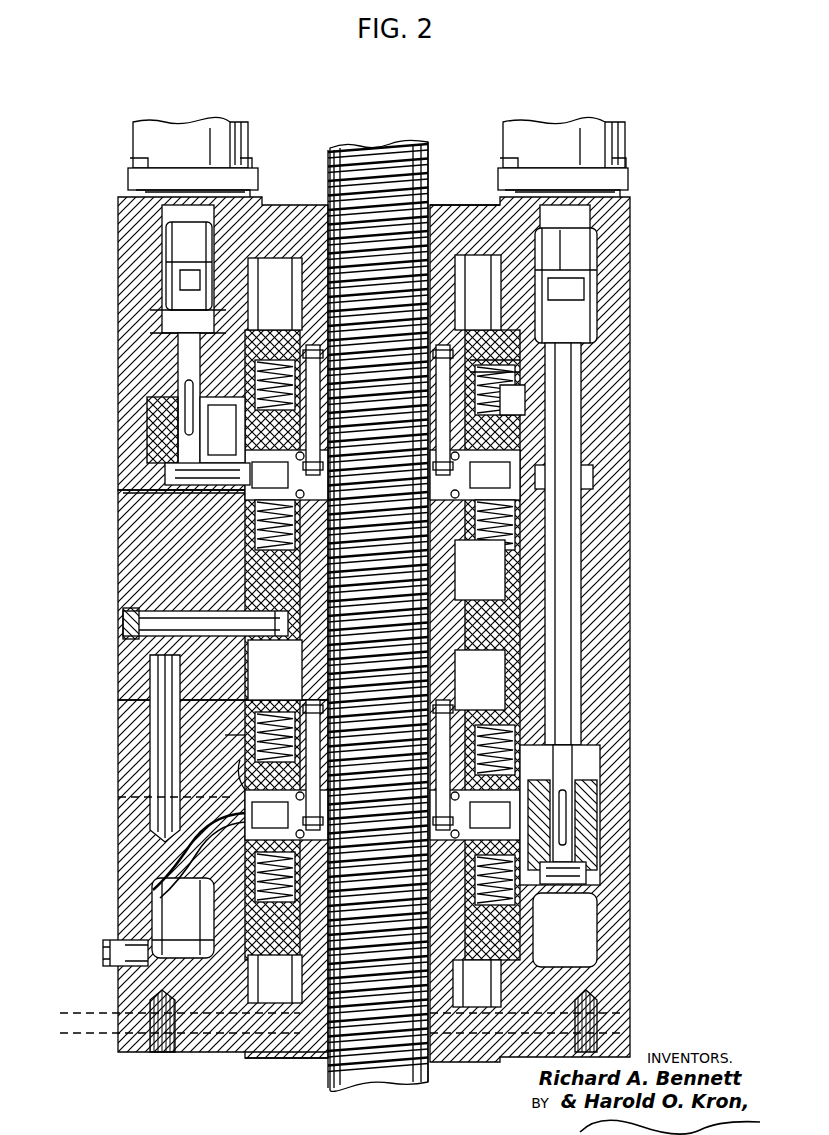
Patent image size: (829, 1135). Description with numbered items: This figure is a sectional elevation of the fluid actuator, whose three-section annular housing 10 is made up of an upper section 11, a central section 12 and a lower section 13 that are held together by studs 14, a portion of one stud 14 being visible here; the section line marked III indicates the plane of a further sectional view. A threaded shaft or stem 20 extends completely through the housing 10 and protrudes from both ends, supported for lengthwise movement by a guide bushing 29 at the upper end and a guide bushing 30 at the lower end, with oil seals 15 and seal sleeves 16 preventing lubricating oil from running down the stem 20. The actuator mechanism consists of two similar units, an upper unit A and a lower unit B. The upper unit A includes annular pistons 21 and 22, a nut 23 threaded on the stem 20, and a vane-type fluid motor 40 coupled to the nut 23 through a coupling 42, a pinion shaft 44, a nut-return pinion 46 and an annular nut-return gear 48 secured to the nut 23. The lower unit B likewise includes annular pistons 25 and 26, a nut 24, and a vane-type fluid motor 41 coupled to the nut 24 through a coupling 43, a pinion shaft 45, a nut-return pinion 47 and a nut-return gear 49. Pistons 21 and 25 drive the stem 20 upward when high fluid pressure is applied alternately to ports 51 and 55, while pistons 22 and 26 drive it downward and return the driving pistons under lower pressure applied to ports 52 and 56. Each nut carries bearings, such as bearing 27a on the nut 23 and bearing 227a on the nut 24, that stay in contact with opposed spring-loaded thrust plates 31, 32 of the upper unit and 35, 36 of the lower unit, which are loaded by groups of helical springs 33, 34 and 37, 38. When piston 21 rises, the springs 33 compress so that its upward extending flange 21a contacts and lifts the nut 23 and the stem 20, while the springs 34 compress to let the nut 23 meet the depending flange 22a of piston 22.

The annular housing 10 is at (700, 460).
The upper section 11 is at (132, 241).
The central section 12 is at (132, 547).
The lower section 13 is at (132, 837).
The stud 14 is at (165, 721).
The oil seal 15 is at (546, 946).
The seal sleeve 16 is at (445, 450).
The threaded shaft or stem 20 is at (376, 1062).
The piston 21 is at (250, 560).
The upward extending flange 21a is at (480, 570).
The piston 22 is at (262, 332).
The depending flange 22a is at (489, 356).
The nut 23 is at (560, 479).
The nut 24 is at (500, 766).
The piston 25 is at (262, 912).
The piston 26 is at (240, 692).
The bearing 27a is at (168, 482).
The guide bushing 29 is at (432, 212).
The guide bushing 30 is at (310, 1058).
The annular thrust plate 31 is at (242, 498).
The annular thrust plate 32 is at (505, 402).
The helical springs 33 is at (266, 510).
The helical springs 34 is at (556, 395).
The thrust plate 35 is at (236, 765).
The thrust plate 36 is at (262, 848).
The helical compression springs 37 is at (245, 737).
The helical compression springs 38 is at (195, 848).
The vane-type fluid motor 40 is at (186, 132).
The vane-type fluid motor 41 is at (566, 135).
The coupling 42 is at (174, 281).
The coupling 43 is at (582, 290).
The pinion shaft 44 is at (186, 372).
The pinion shaft 45 is at (566, 452).
The nut-return pinion 46 is at (162, 419).
The nut-return pinion 47 is at (590, 790).
The annular nut-return gear 48 is at (215, 438).
The nut-return gear 49 is at (505, 835).
The port 51 is at (150, 622).
The port 52 is at (540, 235).
The port 55 is at (338, 1021).
The port 56 is at (430, 622).
The bearing 227a is at (200, 796).
The upper unit A is at (530, 436).
The lower unit B is at (530, 890).
The section line III is at (76, 460).